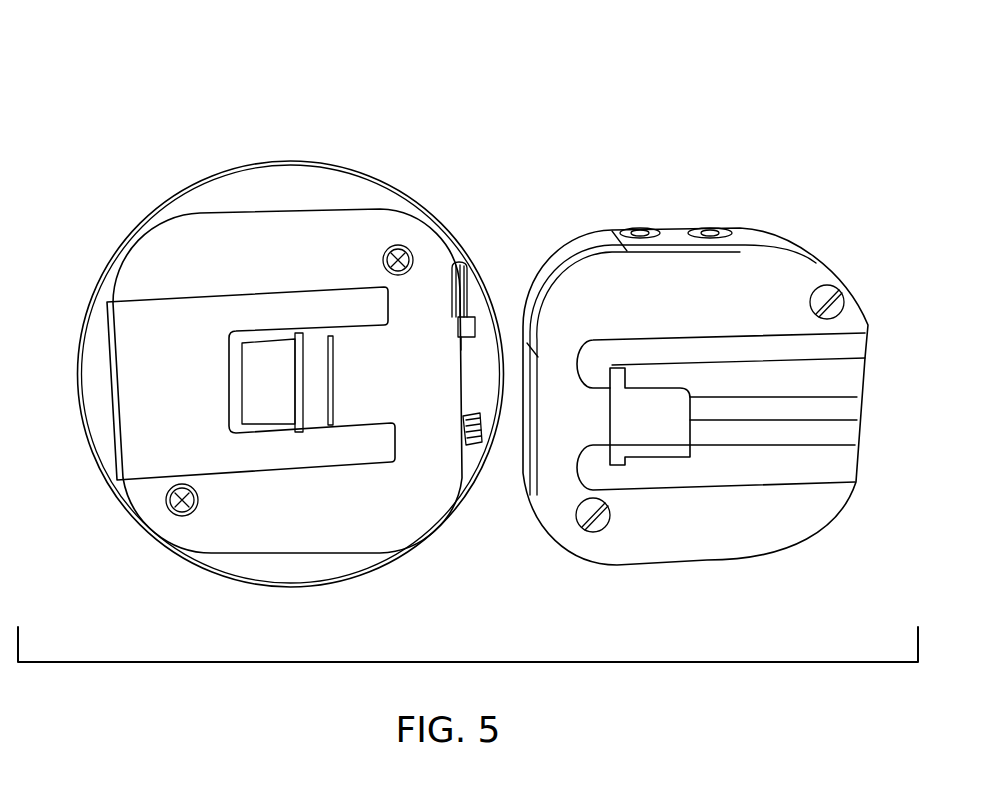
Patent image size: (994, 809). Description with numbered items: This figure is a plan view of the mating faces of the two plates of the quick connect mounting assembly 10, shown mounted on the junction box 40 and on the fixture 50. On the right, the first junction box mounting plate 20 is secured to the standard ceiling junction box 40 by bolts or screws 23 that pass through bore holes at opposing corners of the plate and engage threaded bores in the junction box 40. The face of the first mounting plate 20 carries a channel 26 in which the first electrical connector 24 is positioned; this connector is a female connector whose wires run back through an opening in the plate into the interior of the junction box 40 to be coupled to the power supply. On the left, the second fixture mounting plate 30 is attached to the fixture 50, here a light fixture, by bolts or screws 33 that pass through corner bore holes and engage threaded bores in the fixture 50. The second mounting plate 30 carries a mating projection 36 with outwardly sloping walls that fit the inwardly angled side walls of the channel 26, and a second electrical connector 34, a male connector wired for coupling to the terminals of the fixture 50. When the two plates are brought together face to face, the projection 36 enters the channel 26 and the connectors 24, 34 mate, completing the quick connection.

The quick connect mounting assembly 10 is at (132, 74).
The first junction box mounting plate 20 is at (793, 277).
The bolts or screws 23 is at (838, 307).
The first electrical connector 24 is at (655, 438).
The channel 26 is at (682, 353).
The second fixture mounting plate 30 is at (167, 265).
The bolts or screws 33 is at (412, 255).
The second electrical connector 34 is at (273, 378).
The mating projection 36 is at (348, 303).
The junction box 40 is at (740, 229).
The fixture 50 is at (221, 170).